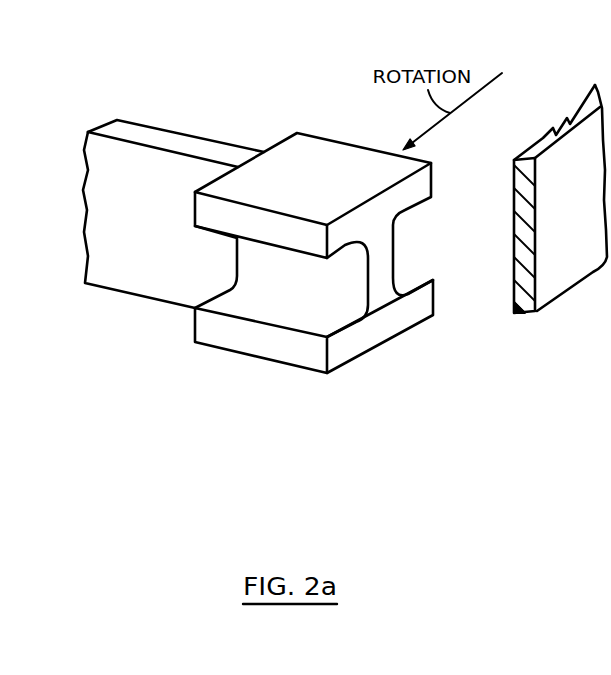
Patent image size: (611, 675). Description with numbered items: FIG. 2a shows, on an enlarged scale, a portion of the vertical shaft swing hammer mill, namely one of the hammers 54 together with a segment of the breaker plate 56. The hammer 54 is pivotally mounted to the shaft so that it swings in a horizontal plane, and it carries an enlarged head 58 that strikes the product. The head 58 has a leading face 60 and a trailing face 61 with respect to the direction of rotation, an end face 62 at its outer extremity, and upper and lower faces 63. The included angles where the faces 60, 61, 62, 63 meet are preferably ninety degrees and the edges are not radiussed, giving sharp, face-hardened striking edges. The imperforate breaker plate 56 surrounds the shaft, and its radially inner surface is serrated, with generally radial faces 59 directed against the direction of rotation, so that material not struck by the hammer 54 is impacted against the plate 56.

The hammer 54 is at (169, 116).
The breaker plate 56 is at (556, 223).
The enlarged head 58 is at (337, 134).
The radial face 59 is at (534, 145).
The leading face 60 is at (314, 244).
The trailing face 61 is at (258, 345).
The end face 62 is at (413, 191).
The upper and lower faces 63 is at (215, 221).